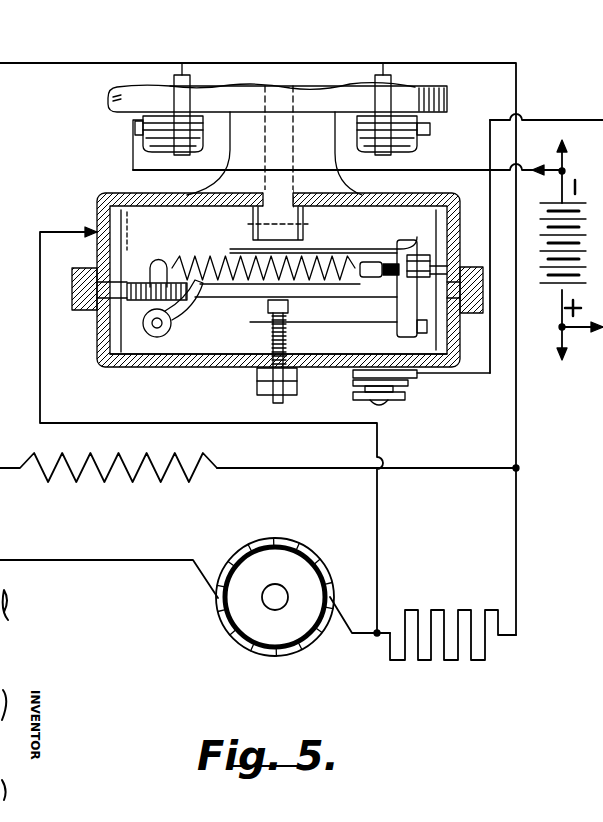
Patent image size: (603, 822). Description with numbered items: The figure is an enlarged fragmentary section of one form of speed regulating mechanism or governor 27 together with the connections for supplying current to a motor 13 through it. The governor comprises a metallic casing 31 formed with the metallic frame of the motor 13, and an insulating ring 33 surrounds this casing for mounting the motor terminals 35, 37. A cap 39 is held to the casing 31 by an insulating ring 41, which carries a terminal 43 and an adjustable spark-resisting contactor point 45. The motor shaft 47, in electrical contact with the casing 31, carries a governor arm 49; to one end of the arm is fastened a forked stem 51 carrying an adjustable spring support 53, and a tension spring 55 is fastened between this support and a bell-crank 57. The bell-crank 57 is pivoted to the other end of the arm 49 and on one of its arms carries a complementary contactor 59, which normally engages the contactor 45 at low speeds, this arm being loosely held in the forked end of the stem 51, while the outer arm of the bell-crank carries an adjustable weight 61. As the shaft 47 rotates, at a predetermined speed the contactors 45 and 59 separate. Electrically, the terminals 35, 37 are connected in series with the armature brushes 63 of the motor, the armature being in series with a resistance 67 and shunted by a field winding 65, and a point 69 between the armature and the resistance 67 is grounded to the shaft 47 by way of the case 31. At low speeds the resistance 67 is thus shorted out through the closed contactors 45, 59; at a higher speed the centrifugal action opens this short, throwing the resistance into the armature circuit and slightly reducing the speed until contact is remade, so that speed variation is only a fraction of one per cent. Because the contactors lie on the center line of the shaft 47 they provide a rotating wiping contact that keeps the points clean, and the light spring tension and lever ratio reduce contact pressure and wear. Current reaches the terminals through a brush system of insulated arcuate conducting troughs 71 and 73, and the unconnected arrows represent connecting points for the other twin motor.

The motor 13 is at (247, 146).
The governor 27 is at (205, 372).
The metallic casing 31 is at (98, 203).
The insulating ring 33 is at (112, 105).
The motor terminal 35 is at (143, 135).
The motor terminal 37 is at (400, 152).
The cap 39 is at (335, 380).
The insulating ring 41 is at (72, 284).
The terminal 43 is at (400, 390).
The adjustable spark-resisting contactor point 45 is at (292, 345).
The motor shaft 47 is at (300, 210).
The governor arm 49 is at (367, 248).
The forked stem 51 is at (407, 295).
The adjustable spring support 53 is at (413, 262).
The tension spring 55 is at (203, 263).
The bell-crank 57 is at (247, 323).
The complementary contactor 59 is at (290, 305).
The adjustable weight 61 is at (140, 300).
The armature brushes 63 is at (207, 582).
The field winding 65 is at (188, 480).
The resistance 67 is at (447, 660).
The point 69 is at (377, 636).
The arcuate conducting trough 71 is at (458, 121).
The arcuate conducting trough 73 is at (468, 174).